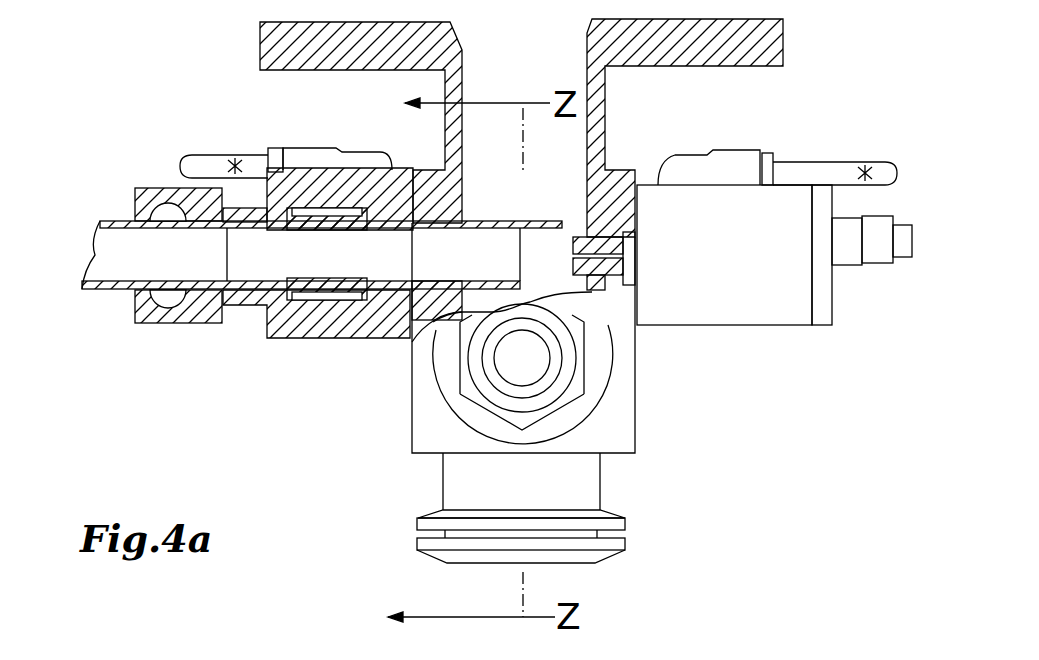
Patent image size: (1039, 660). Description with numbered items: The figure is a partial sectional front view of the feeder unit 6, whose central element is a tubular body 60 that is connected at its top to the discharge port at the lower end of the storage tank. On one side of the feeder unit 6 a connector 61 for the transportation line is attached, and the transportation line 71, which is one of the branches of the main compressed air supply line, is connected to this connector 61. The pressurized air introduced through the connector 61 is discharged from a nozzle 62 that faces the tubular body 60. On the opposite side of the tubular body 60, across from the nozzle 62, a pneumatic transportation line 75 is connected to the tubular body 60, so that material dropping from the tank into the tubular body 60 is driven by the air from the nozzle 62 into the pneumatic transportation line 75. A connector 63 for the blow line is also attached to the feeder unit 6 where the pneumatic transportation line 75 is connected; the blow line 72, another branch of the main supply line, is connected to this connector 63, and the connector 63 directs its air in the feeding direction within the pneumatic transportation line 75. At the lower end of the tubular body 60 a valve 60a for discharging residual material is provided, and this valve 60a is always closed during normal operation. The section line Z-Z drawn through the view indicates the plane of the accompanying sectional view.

The feeder unit 6 is at (805, 83).
The tubular body 60 is at (598, 115).
The valve for discharging a residual material 60a is at (612, 512).
The connector for transportation line 61 is at (742, 155).
The nozzle 62 is at (632, 310).
The connector for blow line 63 is at (313, 160).
The transportation line 71 is at (834, 163).
The blow line 72 is at (205, 156).
The pneumatic transportation line 75 is at (112, 292).